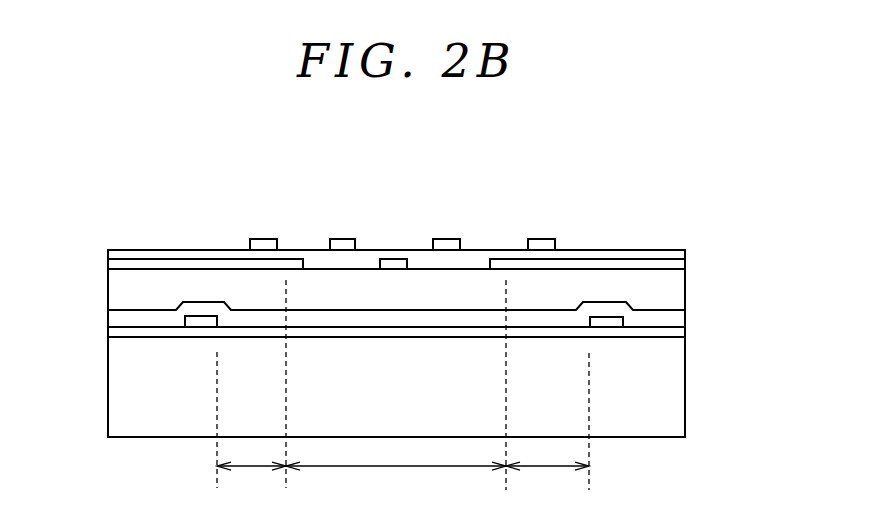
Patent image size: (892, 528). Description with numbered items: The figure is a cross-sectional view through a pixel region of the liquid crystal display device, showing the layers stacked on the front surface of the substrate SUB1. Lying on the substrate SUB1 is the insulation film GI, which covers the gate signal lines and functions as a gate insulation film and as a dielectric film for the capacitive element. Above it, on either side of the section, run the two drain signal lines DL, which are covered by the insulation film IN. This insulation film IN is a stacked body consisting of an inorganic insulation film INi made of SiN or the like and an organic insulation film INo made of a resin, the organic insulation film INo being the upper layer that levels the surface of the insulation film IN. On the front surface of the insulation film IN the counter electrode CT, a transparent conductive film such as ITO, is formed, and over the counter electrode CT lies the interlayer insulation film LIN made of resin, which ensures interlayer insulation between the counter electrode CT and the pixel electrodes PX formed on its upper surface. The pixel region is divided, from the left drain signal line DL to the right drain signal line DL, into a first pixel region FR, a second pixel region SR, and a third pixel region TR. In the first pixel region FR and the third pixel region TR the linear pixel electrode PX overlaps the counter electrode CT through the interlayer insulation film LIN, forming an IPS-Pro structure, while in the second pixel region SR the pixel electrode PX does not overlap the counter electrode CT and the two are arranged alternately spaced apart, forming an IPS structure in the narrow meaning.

The interlayer insulation film LIN is at (127, 253).
The drain signal line DL is at (198, 317).
The counter electrode CT is at (227, 263).
The pixel electrode PX is at (345, 240).
The insulation film GI is at (127, 328).
The organic insulation film INo is at (673, 287).
The inorganic insulation film INi is at (675, 317).
The insulation film IN is at (765, 270).
The substrate SUB1 is at (155, 413).
The first pixel region FR is at (251, 484).
The second pixel region SR is at (396, 484).
The third pixel region TR is at (547, 484).